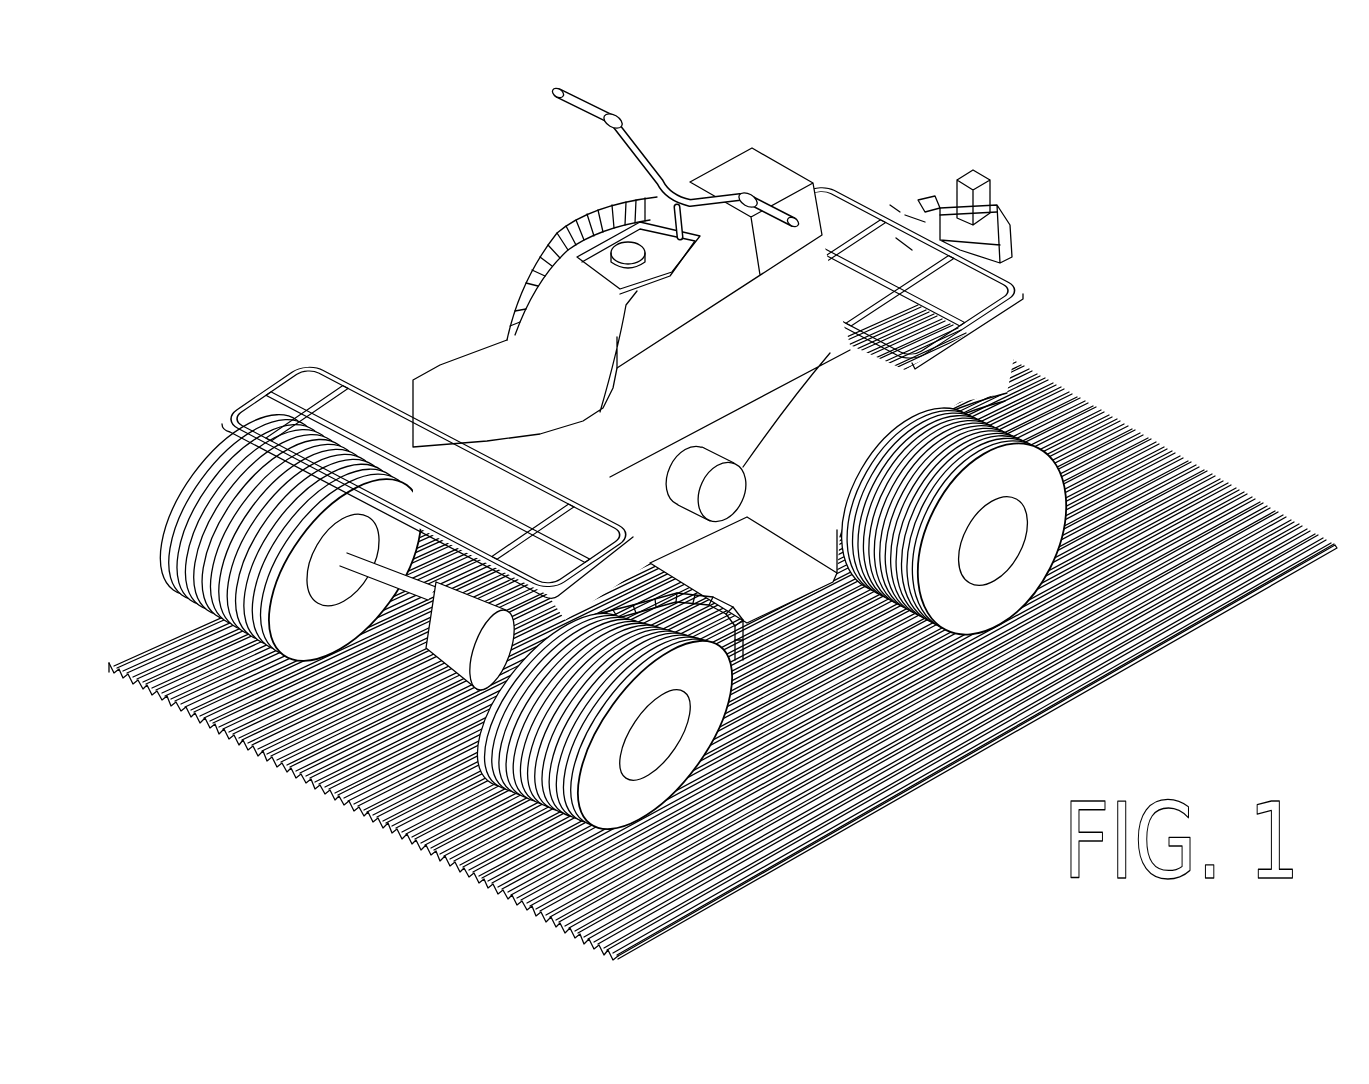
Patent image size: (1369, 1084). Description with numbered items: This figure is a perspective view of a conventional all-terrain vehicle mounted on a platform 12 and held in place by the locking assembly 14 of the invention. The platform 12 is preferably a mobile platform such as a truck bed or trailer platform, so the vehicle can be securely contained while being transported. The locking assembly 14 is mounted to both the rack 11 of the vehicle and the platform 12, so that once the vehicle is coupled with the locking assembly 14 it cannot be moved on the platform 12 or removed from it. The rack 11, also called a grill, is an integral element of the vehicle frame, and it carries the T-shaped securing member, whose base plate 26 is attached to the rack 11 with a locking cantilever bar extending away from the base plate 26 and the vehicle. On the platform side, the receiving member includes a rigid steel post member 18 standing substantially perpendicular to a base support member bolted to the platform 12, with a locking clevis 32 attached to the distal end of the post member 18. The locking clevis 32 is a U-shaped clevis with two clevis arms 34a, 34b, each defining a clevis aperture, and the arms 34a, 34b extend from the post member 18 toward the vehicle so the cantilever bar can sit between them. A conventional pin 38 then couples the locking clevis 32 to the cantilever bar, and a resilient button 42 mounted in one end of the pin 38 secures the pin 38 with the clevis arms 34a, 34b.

The rack 11 is at (1023, 303).
The platform 12 is at (836, 795).
The locking assembly 14 is at (613, 471).
The post member 18 is at (973, 171).
The base plate 26 is at (910, 247).
The locking clevis 32 is at (997, 218).
The clevis arm 34a is at (1002, 245).
The clevis arm 34b is at (927, 203).
The pin 38 is at (920, 223).
The resilient button 42 is at (897, 207).